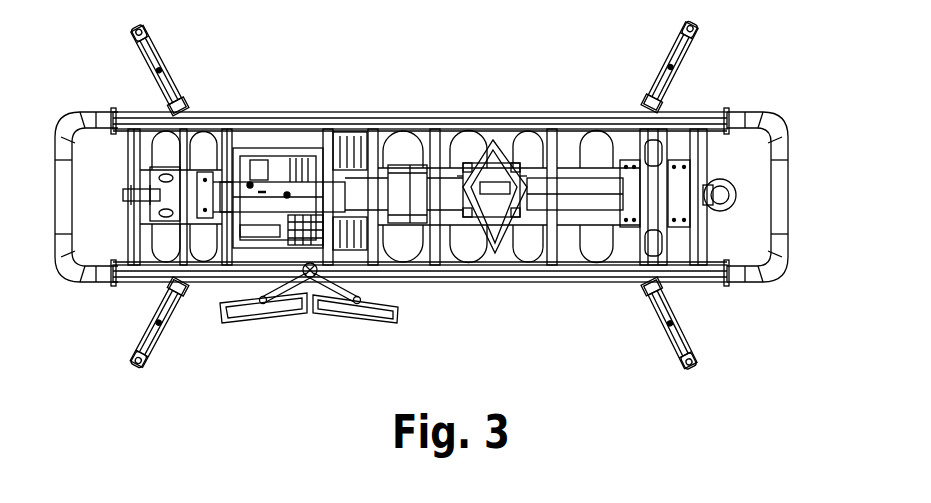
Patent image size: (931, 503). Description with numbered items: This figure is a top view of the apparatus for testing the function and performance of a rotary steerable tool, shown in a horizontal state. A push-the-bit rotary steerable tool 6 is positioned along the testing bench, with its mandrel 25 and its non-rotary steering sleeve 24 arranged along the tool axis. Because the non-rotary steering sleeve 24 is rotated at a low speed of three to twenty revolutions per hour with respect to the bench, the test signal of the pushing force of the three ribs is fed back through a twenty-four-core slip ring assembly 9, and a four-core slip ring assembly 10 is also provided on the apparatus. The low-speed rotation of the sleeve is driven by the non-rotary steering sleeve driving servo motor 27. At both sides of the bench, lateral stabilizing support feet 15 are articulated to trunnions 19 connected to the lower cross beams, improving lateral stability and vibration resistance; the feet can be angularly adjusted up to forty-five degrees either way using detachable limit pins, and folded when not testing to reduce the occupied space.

The push-the-bit rotary steerable tool 6 is at (598, 200).
The 24-core slip ring assembly 9 is at (408, 178).
The 4-core slip ring assembly 10 is at (277, 128).
The lateral stabilizing support foot 15 is at (133, 68).
The trunnion 19 is at (443, 197).
The non-rotary steering sleeve of rotary steerable tool 24 is at (447, 205).
The mandrel 25 is at (287, 195).
The non-rotary steering sleeve driving servo motor 27 is at (375, 290).